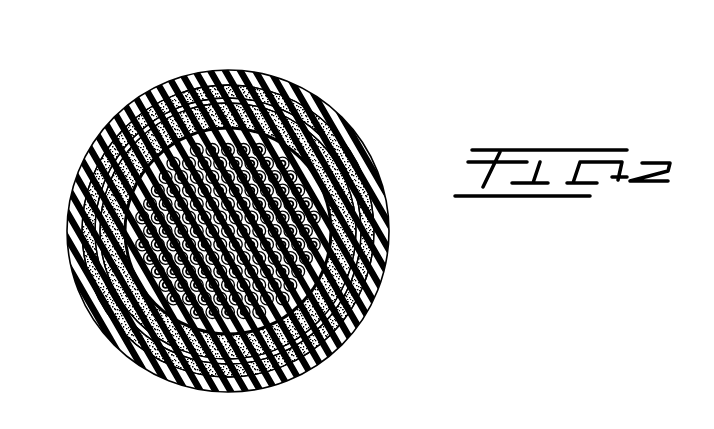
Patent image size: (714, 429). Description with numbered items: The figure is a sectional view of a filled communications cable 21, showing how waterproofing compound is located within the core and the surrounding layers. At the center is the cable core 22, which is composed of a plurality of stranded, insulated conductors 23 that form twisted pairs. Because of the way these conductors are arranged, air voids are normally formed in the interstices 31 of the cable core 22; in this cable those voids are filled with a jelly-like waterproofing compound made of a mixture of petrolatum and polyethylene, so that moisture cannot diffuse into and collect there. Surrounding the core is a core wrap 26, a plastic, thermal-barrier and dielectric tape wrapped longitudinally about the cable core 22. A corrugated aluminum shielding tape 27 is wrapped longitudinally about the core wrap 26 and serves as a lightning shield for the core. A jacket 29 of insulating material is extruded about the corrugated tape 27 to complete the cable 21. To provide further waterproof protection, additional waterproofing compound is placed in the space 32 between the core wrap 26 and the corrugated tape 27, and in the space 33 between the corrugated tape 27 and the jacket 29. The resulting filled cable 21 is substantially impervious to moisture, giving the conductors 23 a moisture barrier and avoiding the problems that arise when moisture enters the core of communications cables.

The communications cable 21 is at (314, 73).
The cable core 22 is at (122, 261).
The stranded, insulated conductors 23 is at (93, 177).
The core wrap 26 is at (372, 206).
The corrugated aluminum shielding tape 27 is at (350, 177).
The jacket 29 is at (140, 112).
The interstices 31 is at (206, 72).
The space between core wrap and corrugated tape 32 is at (345, 329).
The space between corrugated tape and jacket 33 is at (336, 122).